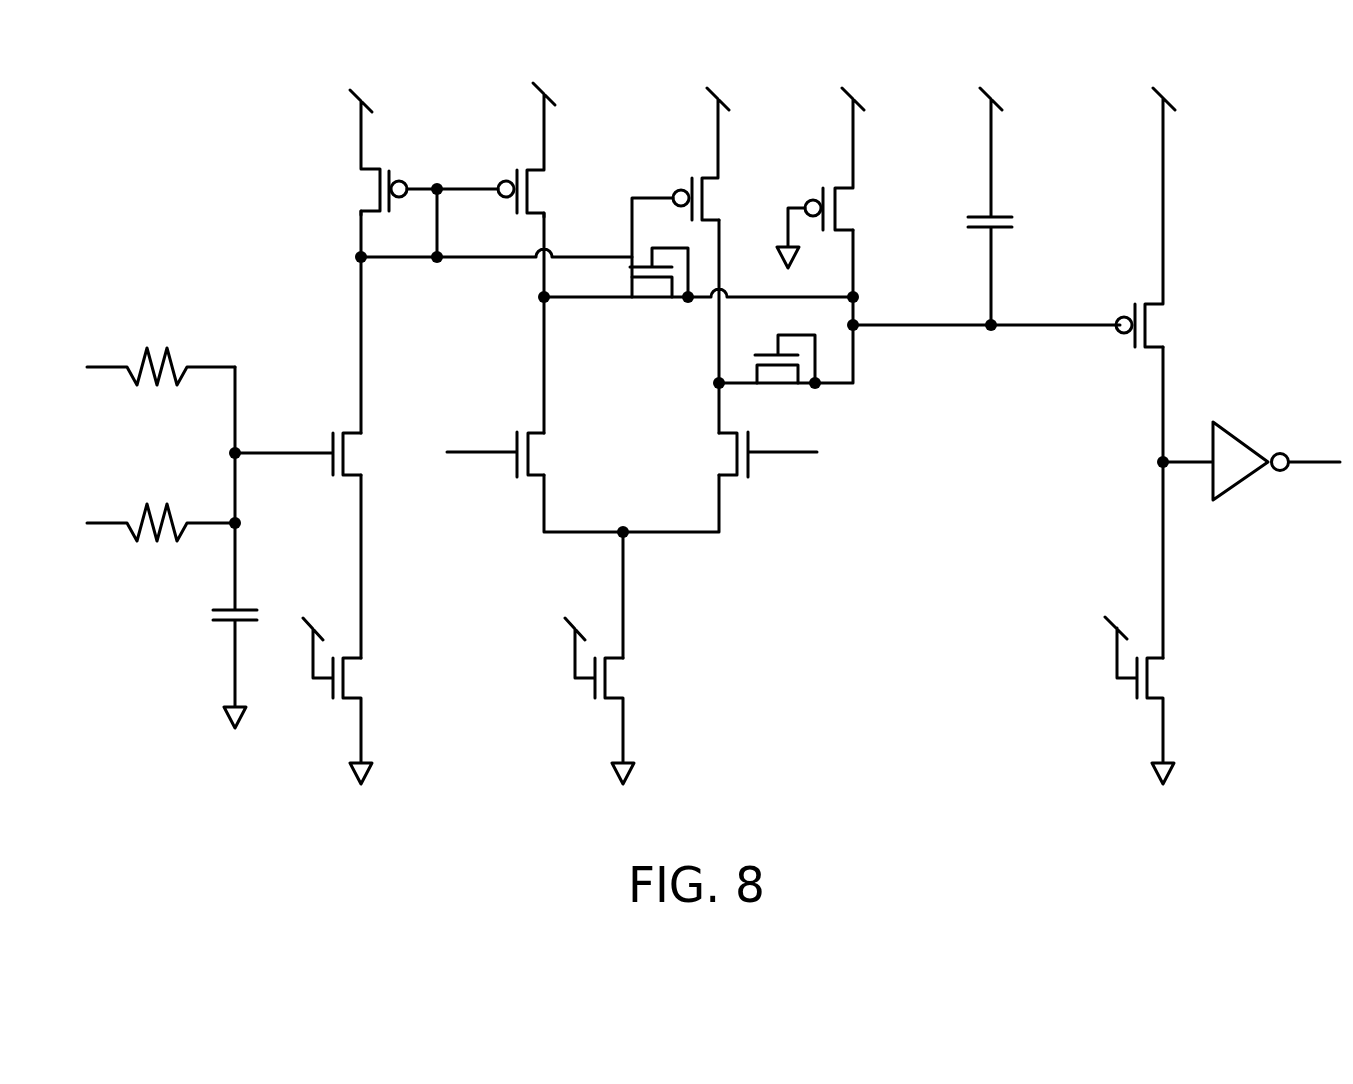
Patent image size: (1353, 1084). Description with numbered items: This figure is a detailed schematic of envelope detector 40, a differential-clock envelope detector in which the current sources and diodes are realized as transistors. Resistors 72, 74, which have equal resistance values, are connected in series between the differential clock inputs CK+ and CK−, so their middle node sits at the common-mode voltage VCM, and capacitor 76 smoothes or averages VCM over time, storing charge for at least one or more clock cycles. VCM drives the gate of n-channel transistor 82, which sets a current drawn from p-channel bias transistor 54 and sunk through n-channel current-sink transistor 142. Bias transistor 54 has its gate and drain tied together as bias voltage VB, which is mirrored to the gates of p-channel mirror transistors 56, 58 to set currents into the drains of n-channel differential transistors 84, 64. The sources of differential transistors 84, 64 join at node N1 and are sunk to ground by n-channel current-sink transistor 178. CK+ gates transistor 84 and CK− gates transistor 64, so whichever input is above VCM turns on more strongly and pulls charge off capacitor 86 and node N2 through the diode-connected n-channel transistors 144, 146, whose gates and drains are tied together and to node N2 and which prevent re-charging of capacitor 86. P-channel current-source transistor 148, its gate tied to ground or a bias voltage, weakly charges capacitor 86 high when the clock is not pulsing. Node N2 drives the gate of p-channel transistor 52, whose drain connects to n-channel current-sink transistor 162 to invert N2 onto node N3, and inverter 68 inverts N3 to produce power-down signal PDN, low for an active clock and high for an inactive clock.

The envelope detector 40 is at (709, 467).
The p-channel transistor 52 is at (1153, 327).
The p-channel bias transistor 54 is at (373, 190).
The p-channel mirror transistor 56 is at (533, 191).
The p-channel mirror transistor 58 is at (710, 197).
The n-channel differential transistor 64 is at (731, 451).
The inverter 68 is at (1245, 477).
The resistor 72 is at (166, 355).
The resistor 74 is at (166, 511).
The capacitor 76 is at (248, 616).
The n-channel transistor 82 is at (352, 453).
The n-channel differential transistor 84 is at (546, 453).
The capacitor 86 is at (1000, 224).
The n-channel current-sink transistor 142 is at (362, 679).
The n-channel transistor 144 is at (652, 299).
The n-channel transistor 146 is at (768, 375).
The p-channel current-source transistor 148 is at (855, 214).
The n-channel current-sink transistor 162 is at (1164, 679).
The n-channel current-sink transistor 178 is at (624, 679).